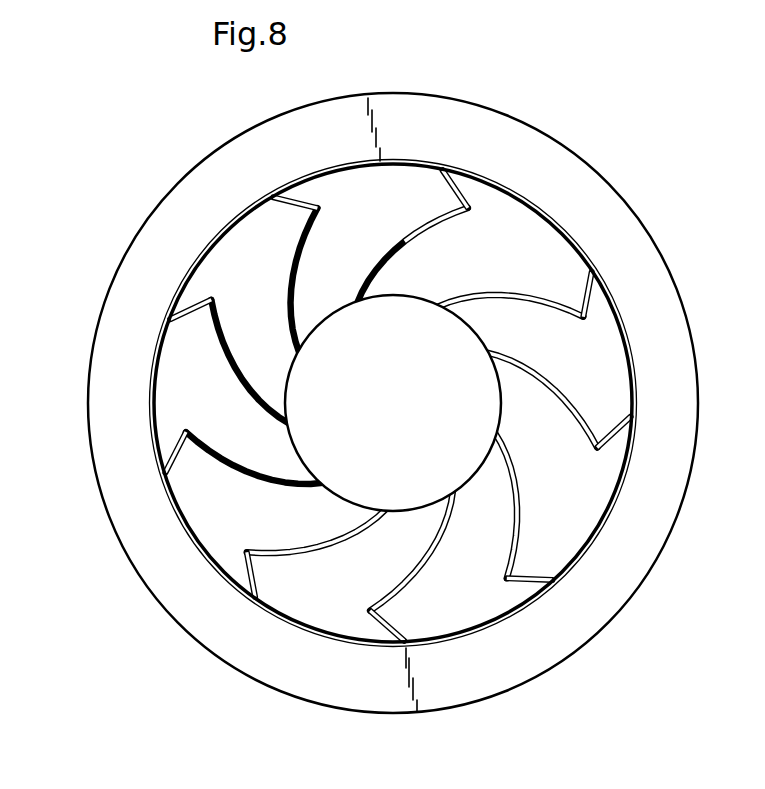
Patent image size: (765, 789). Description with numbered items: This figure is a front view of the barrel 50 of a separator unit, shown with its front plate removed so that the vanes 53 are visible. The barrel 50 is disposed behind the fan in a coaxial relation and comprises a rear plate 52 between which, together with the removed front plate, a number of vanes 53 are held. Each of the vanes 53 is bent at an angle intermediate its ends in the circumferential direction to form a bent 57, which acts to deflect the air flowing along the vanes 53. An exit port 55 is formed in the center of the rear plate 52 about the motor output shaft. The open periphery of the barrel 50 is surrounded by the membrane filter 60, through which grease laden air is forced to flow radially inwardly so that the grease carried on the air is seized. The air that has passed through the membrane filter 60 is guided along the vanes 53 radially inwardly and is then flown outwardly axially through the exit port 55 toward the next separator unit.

The barrel 50 is at (125, 248).
The rear plate 52 is at (110, 369).
The vanes 53 is at (303, 557).
The exit port 55 is at (466, 344).
The bent 57 is at (317, 200).
The membrane filter 60 is at (223, 232).